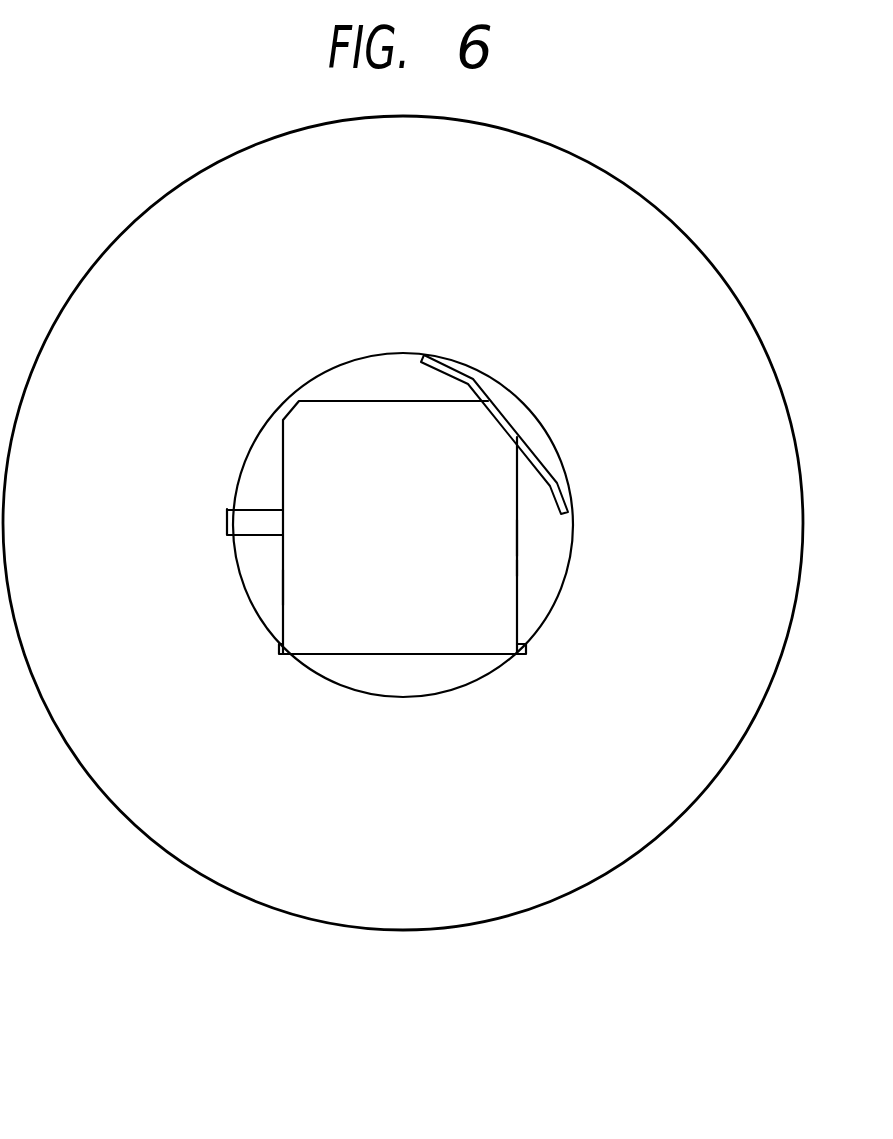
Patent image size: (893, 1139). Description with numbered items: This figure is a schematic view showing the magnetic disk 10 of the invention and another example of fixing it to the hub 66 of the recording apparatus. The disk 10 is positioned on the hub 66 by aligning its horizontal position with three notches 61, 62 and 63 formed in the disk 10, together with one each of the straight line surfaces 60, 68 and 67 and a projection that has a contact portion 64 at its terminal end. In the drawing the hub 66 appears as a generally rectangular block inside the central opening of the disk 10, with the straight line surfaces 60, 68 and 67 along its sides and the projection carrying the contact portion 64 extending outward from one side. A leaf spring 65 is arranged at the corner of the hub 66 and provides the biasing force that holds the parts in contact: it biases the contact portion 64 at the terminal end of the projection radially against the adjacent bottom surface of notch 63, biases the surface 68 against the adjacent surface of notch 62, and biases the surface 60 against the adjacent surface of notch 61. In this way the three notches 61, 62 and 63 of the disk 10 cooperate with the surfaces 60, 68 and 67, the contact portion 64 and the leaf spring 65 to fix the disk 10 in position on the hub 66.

The magnetic disk 10 is at (748, 320).
The straight line surface 60 is at (490, 654).
The notch 61 is at (528, 647).
The notch 62 is at (278, 646).
The notch 63 is at (228, 540).
The contact portion 64 is at (226, 509).
The leaf spring 65 is at (531, 440).
The hub 66 is at (512, 568).
The straight line surface 67 is at (518, 538).
The straight line surface 68 is at (283, 587).